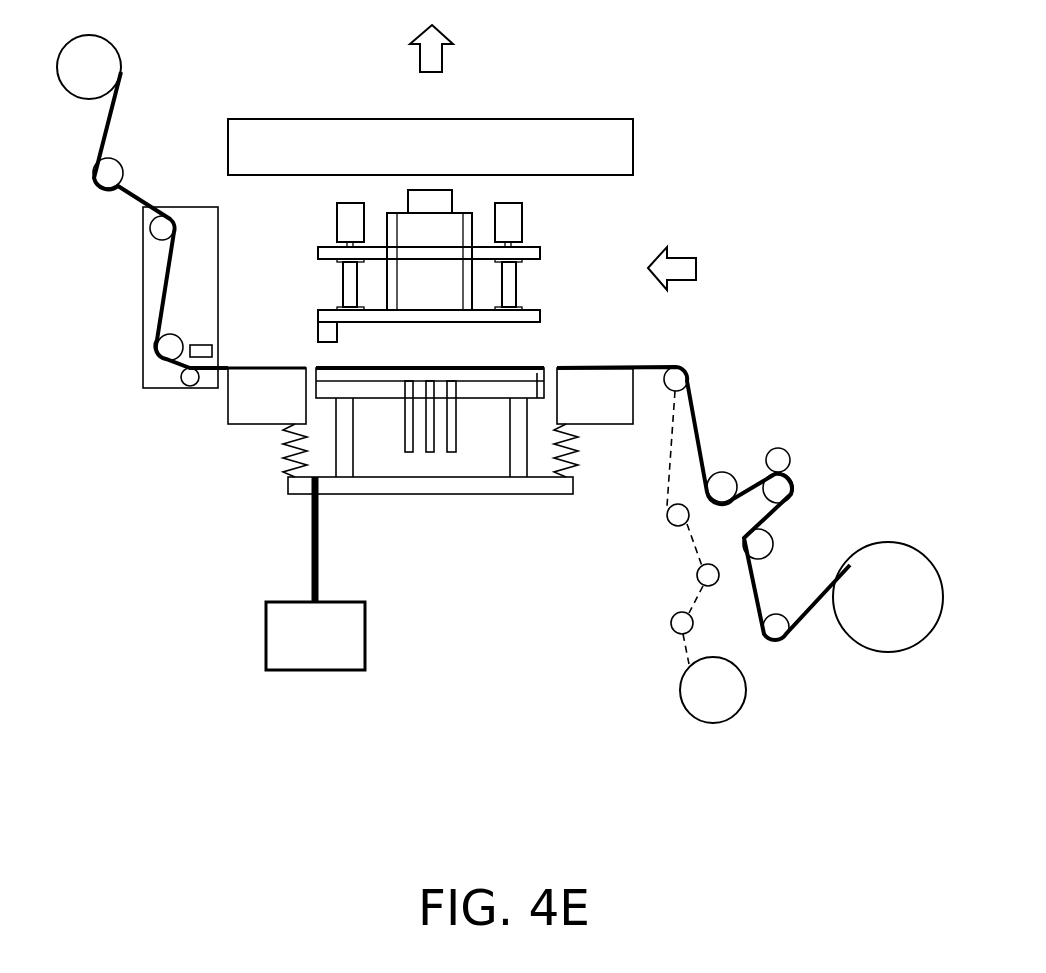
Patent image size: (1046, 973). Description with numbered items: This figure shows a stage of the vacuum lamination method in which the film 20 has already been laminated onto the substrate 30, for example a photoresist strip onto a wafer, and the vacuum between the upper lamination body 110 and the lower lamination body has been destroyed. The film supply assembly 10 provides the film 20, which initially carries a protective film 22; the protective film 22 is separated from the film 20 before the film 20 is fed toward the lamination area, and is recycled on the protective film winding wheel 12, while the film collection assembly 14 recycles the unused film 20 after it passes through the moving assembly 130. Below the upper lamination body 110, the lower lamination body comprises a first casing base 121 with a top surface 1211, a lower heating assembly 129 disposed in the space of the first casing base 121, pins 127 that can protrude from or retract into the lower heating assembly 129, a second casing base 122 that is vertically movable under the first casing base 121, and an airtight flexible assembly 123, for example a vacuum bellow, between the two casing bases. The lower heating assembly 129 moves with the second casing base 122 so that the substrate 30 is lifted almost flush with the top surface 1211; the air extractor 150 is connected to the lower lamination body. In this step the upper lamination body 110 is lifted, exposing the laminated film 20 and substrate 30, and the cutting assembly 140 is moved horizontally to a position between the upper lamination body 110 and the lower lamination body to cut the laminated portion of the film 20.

The film supply assembly 10 is at (855, 640).
The protective film winding wheel 12 is at (745, 707).
The film collection assembly 14 is at (110, 42).
The film 20 is at (510, 366).
The protective film 22 is at (675, 660).
The substrate 30 is at (535, 398).
The upper lamination body 110 is at (535, 119).
The first casing base 121 is at (253, 413).
The top surface 1211 is at (271, 356).
The second casing base 122 is at (420, 485).
The airtight flexible assembly 123 is at (290, 457).
The pins 127 is at (457, 423).
The lower heating assembly 129 is at (368, 398).
The moving assembly 130 is at (218, 280).
The cutting assembly 140 is at (517, 283).
The air extractor 150 is at (315, 673).